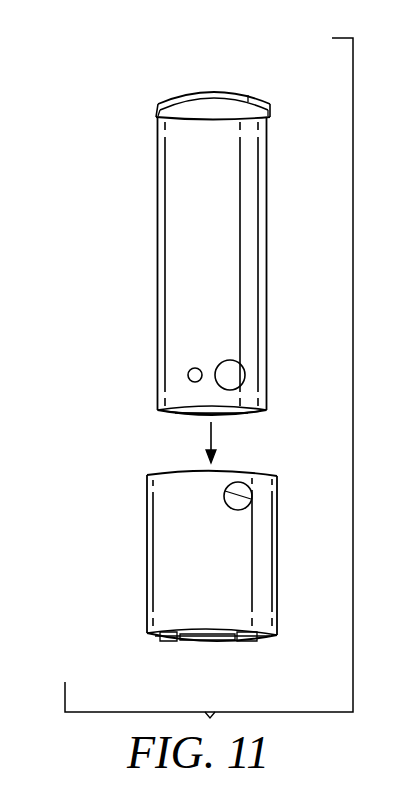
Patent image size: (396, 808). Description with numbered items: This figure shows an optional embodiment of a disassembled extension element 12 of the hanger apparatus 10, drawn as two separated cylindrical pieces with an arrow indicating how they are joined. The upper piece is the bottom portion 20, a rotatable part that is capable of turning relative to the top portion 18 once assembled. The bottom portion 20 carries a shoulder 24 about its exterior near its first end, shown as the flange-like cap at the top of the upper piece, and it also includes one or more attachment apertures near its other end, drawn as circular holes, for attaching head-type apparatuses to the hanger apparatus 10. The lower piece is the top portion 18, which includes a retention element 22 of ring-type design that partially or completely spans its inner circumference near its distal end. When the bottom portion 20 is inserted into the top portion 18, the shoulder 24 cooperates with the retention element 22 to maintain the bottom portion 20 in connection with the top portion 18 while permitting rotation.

The hanger apparatus 10 is at (124, 68).
The extension element 12 is at (260, 472).
The top portion 18 is at (168, 538).
The bottom portion 20 is at (190, 236).
The retention element 22 is at (197, 644).
The shoulder 24 is at (157, 110).